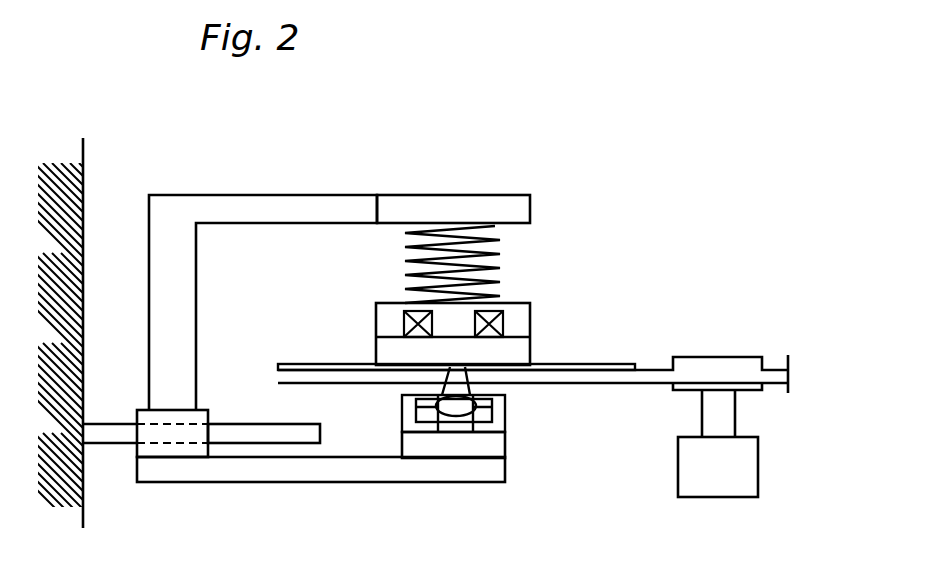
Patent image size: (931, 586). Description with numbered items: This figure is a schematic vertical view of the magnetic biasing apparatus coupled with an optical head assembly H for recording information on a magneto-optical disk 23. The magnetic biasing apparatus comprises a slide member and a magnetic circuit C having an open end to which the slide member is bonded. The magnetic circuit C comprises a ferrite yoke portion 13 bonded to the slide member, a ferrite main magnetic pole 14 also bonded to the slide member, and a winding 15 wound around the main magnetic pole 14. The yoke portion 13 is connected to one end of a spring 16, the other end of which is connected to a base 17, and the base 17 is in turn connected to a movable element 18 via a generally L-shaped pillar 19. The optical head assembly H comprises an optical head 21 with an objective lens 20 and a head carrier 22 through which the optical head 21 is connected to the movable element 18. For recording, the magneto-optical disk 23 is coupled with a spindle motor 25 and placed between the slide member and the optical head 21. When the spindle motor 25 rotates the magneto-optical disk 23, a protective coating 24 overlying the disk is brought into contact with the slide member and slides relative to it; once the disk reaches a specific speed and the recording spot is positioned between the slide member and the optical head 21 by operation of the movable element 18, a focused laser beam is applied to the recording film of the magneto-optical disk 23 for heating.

The pillar 19 is at (258, 195).
The base 17 is at (530, 197).
The spring 16 is at (405, 260).
The yoke portion 13 is at (532, 317).
The magnetic circuit C is at (535, 316).
The main magnetic pole 14 is at (455, 330).
The winding 15 is at (425, 332).
The protective coating 24 is at (300, 366).
The movable element 18 is at (150, 410).
The magneto-optical disk 23 is at (283, 385).
The objective lens 20 is at (505, 407).
The optical head 21 is at (505, 448).
The head carrier 22 is at (262, 483).
The optical head assembly H is at (474, 484).
The spindle motor 25 is at (680, 497).